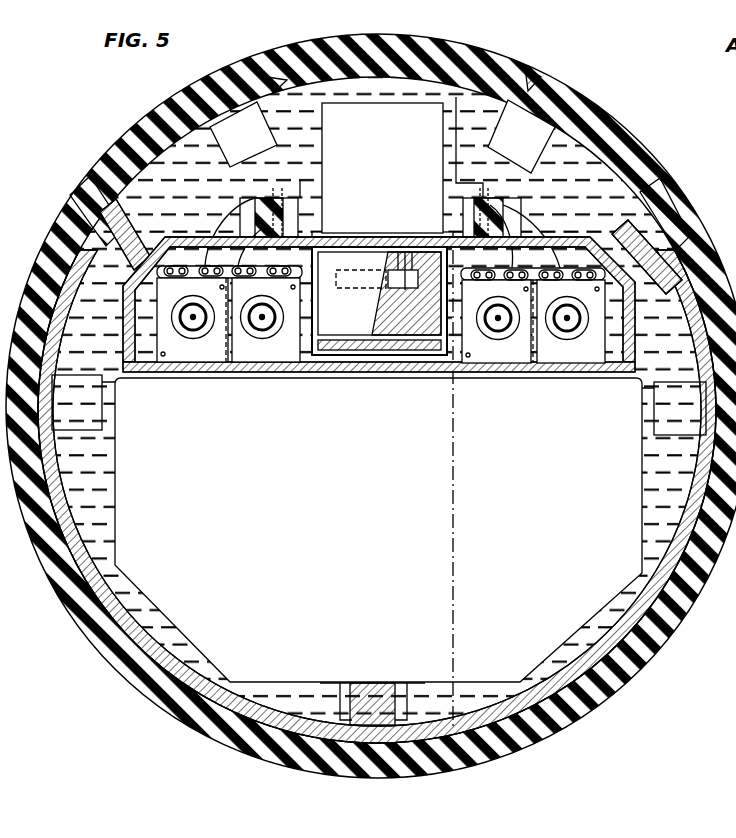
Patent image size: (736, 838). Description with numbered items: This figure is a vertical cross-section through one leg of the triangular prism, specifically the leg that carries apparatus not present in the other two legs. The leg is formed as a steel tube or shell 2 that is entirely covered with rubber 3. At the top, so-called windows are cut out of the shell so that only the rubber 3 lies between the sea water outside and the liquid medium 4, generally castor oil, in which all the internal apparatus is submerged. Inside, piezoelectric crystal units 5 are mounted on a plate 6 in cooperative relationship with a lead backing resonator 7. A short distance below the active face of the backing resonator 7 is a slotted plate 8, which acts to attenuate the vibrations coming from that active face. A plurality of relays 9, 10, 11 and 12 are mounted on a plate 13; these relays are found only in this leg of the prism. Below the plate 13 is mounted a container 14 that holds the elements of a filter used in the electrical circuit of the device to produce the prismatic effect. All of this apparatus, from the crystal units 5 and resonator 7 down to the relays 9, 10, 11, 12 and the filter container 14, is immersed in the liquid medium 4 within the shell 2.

The steel tube or shell 2 is at (640, 557).
The rubber 3 is at (126, 147).
The liquid medium 4 is at (145, 195).
The piezoelectric crystal units 5 is at (458, 100).
The plate 6 is at (323, 238).
The lead backing resonator 7 is at (379, 301).
The slotted plate 8 is at (338, 356).
The relay 9 is at (182, 364).
The relay 10 is at (270, 364).
The relay 11 is at (483, 364).
The relay 12 is at (578, 364).
The plate 13 is at (360, 368).
The container 14 is at (200, 637).